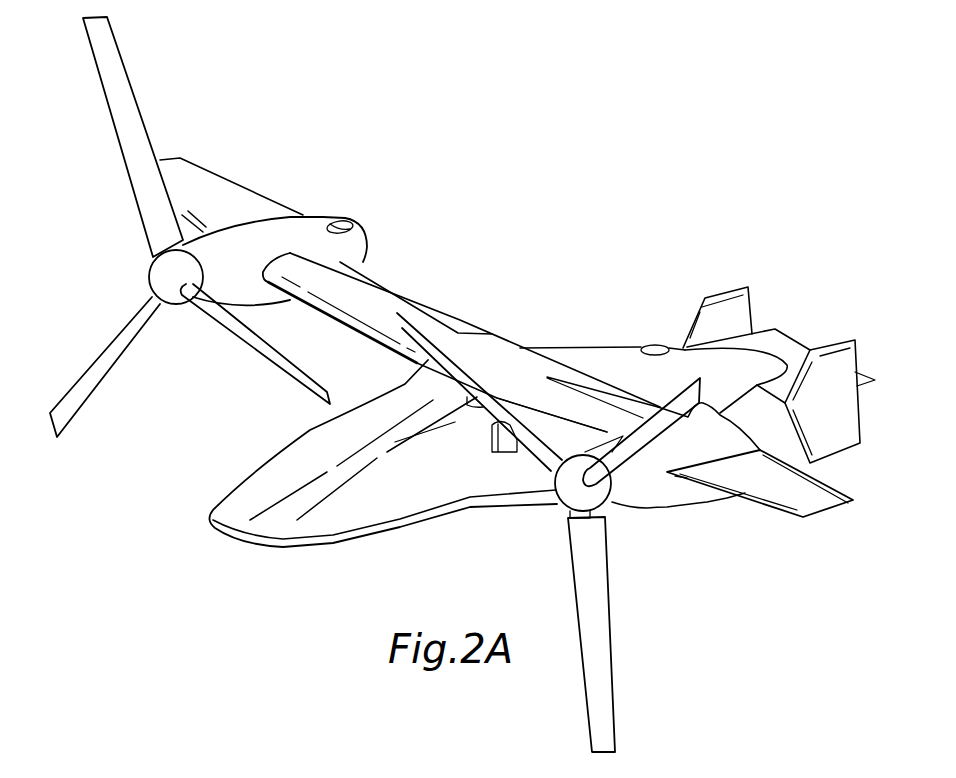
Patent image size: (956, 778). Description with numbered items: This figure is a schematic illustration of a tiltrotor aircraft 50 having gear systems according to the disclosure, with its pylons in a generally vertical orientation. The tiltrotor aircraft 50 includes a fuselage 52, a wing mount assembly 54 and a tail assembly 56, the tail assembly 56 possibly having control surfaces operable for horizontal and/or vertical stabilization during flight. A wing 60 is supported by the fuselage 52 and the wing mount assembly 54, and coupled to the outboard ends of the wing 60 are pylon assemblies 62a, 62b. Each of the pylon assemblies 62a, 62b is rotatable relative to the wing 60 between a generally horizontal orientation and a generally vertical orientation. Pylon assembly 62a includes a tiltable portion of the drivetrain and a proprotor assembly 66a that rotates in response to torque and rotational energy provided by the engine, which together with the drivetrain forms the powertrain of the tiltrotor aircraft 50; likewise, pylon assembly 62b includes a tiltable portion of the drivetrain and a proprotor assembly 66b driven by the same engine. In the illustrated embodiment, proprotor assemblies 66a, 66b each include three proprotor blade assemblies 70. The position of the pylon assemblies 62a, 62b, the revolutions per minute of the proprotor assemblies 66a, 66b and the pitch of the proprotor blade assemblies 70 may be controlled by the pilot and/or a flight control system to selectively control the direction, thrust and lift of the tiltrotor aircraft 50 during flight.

The tiltrotor aircraft 50 is at (563, 291).
The fuselage 52 is at (423, 490).
The wing mount assembly 54 is at (418, 382).
The tail assembly 56 is at (785, 342).
The wing 60 is at (378, 295).
The pylon assembly 62a is at (672, 500).
The pylon assembly 62b is at (288, 230).
The proprotor assembly 66a is at (557, 500).
The proprotor assembly 66b is at (152, 282).
The proprotor blade assemblies 70 is at (107, 363).